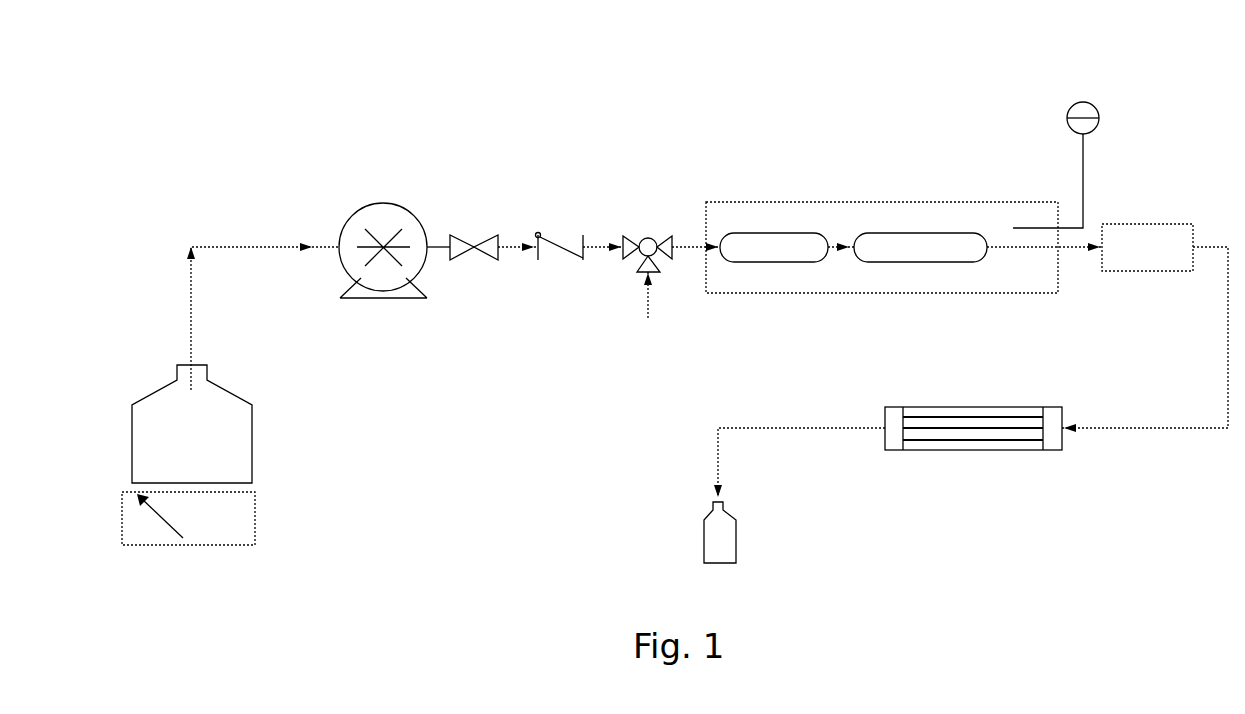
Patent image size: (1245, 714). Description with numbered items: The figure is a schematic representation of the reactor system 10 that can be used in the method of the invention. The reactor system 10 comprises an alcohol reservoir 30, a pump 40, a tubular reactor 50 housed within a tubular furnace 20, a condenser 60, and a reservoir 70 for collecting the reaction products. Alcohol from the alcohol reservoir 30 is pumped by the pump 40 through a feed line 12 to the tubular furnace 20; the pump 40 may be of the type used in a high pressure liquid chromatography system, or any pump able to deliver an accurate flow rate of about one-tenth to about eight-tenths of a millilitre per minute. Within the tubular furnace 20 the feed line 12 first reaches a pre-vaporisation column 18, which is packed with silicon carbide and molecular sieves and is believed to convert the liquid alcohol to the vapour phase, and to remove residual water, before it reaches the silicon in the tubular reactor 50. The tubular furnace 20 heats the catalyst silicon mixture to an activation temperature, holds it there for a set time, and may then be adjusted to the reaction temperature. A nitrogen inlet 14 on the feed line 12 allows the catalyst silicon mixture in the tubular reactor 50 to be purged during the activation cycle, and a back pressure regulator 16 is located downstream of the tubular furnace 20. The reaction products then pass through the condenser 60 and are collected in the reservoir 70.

The reactor system 10 is at (722, 130).
The feed line 12 is at (270, 242).
The nitrogen inlet 14 is at (634, 232).
The back pressure regulator 16 is at (1158, 224).
The pre-vaporisation column 18 is at (746, 262).
The tubular furnace 20 is at (823, 202).
The alcohol reservoir 30 is at (253, 465).
The pump 40 is at (410, 207).
The tubular reactor 50 is at (934, 228).
The condenser 60 is at (958, 450).
The reservoir 70 is at (738, 543).